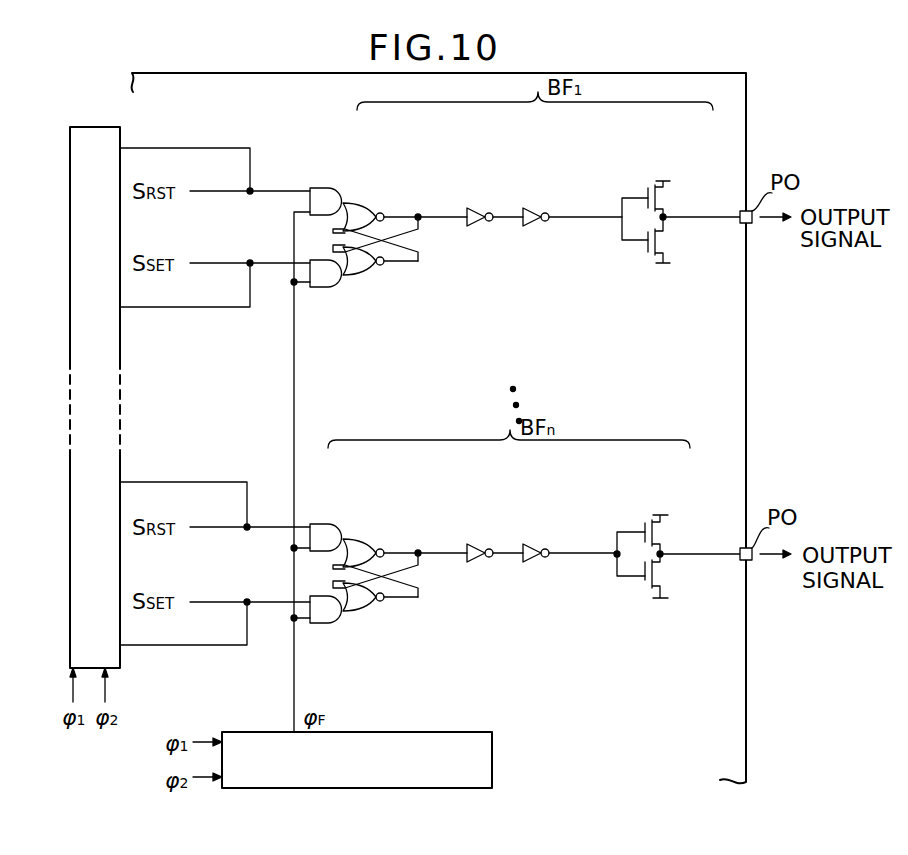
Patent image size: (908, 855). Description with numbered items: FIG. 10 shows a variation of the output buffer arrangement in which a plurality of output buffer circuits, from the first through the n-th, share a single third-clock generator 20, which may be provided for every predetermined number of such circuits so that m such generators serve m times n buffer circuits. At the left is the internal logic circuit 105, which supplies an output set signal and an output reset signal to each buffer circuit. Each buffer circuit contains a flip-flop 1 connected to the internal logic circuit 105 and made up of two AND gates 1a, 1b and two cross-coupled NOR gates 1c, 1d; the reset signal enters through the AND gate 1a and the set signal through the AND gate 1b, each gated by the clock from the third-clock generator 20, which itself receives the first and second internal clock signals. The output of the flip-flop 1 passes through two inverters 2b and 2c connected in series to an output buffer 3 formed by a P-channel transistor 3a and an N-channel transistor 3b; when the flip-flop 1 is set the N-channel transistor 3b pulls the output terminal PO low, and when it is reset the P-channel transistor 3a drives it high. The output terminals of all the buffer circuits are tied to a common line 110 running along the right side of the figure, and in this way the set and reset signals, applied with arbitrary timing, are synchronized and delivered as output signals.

The internal logic circuit 105 is at (100, 125).
The power supply bus line 110 is at (750, 76).
The flip-flop 1 is at (400, 140).
The AND gate 1a is at (328, 186).
The AND gate 1b is at (336, 288).
The NOR gate 1c is at (370, 204).
The NOR gate 1d is at (385, 277).
The inverter 2b is at (475, 206).
The inverter 2c is at (537, 206).
The output buffer 3 is at (633, 158).
The P-channel transistor 3a is at (676, 191).
The N-channel transistor 3b is at (674, 248).
The third-clock generator 20 is at (492, 770).